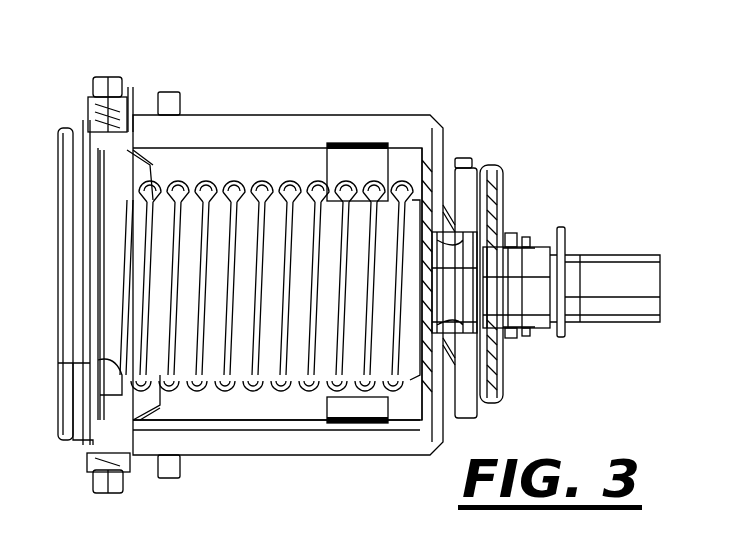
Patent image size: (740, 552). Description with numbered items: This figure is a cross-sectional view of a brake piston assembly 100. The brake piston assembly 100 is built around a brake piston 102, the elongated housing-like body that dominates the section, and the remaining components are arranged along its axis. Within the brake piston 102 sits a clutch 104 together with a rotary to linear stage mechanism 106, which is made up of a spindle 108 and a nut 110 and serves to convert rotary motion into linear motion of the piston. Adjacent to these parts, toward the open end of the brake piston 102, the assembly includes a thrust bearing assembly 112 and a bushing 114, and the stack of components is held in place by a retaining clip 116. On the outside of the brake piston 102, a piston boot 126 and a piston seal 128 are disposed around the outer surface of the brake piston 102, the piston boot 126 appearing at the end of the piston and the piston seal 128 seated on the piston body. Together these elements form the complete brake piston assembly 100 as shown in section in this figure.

The brake piston assembly 100 is at (449, 72).
The brake piston 102 is at (240, 115).
The clutch 104 is at (355, 141).
The rotary to linear stage mechanism 106 is at (273, 399).
The spindle 108 is at (348, 365).
The nut 110 is at (220, 407).
The thrust bearing assembly 112 is at (489, 163).
The bushing 114 is at (535, 250).
The retaining clip 116 is at (562, 232).
The piston boot 126 is at (93, 99).
The piston seal 128 is at (169, 101).